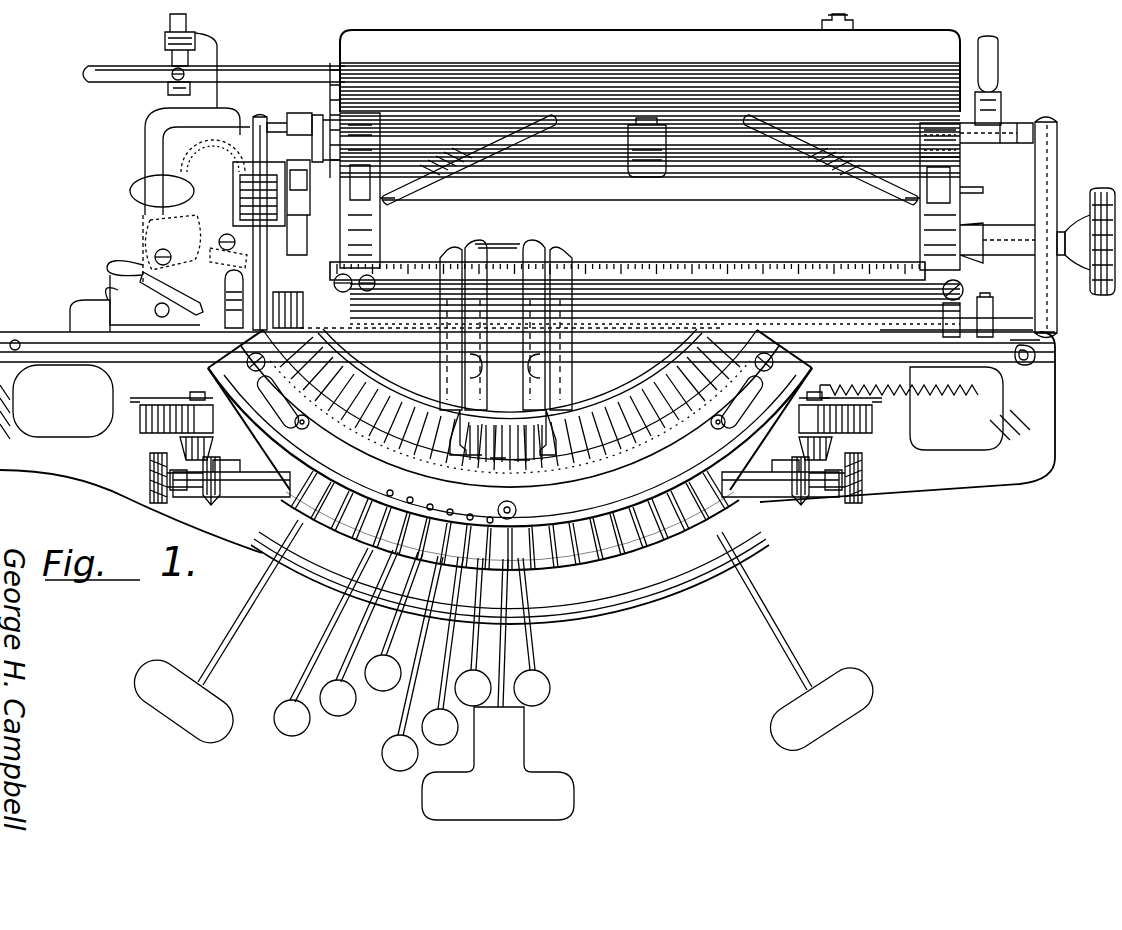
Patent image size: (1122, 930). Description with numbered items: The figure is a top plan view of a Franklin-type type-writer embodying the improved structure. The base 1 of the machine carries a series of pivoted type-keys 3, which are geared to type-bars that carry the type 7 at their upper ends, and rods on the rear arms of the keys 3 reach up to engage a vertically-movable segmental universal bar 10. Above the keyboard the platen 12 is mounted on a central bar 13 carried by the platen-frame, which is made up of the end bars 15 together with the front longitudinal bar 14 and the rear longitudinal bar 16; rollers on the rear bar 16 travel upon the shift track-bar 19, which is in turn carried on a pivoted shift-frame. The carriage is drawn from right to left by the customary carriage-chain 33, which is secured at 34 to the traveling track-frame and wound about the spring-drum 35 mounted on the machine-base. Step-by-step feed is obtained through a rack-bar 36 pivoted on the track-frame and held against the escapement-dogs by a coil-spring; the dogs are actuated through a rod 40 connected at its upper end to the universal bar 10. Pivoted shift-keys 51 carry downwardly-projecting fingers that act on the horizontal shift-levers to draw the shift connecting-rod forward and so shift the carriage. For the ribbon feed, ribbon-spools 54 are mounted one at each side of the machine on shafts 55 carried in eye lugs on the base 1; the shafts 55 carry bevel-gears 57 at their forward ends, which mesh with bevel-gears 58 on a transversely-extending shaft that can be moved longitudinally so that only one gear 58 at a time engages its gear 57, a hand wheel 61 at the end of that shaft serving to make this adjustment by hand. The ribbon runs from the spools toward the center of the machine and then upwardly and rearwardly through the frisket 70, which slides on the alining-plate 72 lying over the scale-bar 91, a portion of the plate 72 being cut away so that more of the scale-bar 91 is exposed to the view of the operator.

The base of the machine 1 is at (628, 598).
The type-keys 3 is at (355, 648).
The type 7 is at (490, 425).
The segmental universal bar 10 is at (510, 523).
The platen 12 is at (650, 212).
The central bar 13 is at (1062, 232).
The front longitudinal bar 14 is at (1004, 322).
The end bars 15 is at (1050, 165).
The rear longitudinal bar 16 is at (290, 121).
The shift track-bar 19 is at (270, 67).
The carriage-chain 33 is at (632, 328).
The frame cross bar 34 is at (1010, 338).
The spring-drum 35 is at (300, 272).
The rack-bar 36 is at (990, 395).
The rod 40 is at (516, 510).
The shift-keys 51 is at (248, 608).
The ribbon-spools 54 is at (132, 403).
The shafts 55 is at (197, 400).
The bevel-gears 57 is at (178, 440).
The bevel-gears 58 is at (210, 502).
The hand wheel 61 is at (157, 504).
The frisket 70 is at (560, 255).
The alining-plate 72 is at (512, 245).
The scale-bar 91 is at (745, 272).